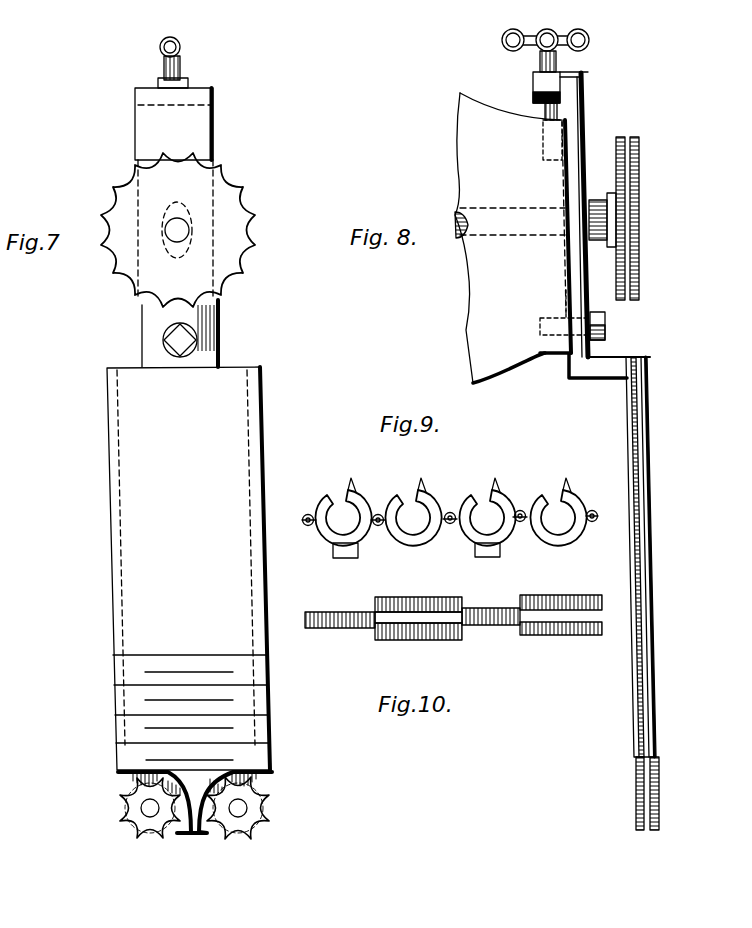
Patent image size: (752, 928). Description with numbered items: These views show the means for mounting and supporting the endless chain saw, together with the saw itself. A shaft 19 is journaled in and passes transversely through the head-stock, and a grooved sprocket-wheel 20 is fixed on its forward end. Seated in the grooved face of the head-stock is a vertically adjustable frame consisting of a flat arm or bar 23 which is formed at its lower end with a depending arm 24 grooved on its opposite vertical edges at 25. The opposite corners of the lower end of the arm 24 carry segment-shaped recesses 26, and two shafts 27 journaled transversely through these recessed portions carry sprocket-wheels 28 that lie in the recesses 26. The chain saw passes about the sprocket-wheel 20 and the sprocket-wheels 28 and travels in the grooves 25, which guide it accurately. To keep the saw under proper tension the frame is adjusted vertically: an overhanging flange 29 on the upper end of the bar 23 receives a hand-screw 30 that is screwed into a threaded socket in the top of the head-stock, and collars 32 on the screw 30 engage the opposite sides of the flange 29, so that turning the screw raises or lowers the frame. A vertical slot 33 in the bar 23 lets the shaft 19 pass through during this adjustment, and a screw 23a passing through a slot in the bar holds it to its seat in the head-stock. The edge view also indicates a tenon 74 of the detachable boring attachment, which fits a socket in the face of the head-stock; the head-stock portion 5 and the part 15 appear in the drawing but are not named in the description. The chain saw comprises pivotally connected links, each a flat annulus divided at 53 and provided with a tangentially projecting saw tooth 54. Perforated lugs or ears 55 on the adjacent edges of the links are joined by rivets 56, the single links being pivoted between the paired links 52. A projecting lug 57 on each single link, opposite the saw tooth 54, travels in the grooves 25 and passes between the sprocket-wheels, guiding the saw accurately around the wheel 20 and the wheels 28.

In FIG. 8, the plate 5 is at (510, 238).
In FIG. 8, the slot 15 is at (556, 317).
In FIG. 7, the shaft 19 is at (190, 230).
In FIG. 8, the shaft 19 is at (460, 238).
In FIG. 7, the grooved sprocket-wheel 20 is at (104, 212).
In FIG. 8, the grooved sprocket-wheel 20 is at (641, 165).
In FIG. 7, the flat arm or bar 23 is at (222, 345).
In FIG. 8, the flat arm or bar 23 is at (590, 123).
In FIG. 7, the screw 23a is at (162, 336).
In FIG. 8, the screw 23a is at (606, 327).
In FIG. 7, the depending arm 24 is at (188, 568).
In FIG. 8, the depending arm 24 is at (655, 488).
In FIG. 8, the grooves 25 is at (646, 548).
In FIG. 7, the segment-shaped recesses 26 is at (133, 777).
In FIG. 7, the shafts 27 is at (150, 808).
In FIG. 7, the sprocket-wheels 28 is at (166, 842).
In FIG. 8, the sprocket-wheels 28 is at (636, 795).
In FIG. 8, the overhanging flange 29 is at (533, 88).
In FIG. 7, the hand-screw 30 is at (183, 47).
In FIG. 8, the hand-screw 30 is at (589, 36).
In FIG. 8, the collars 32 is at (566, 73).
In FIG. 7, the slot 33 is at (176, 216).
In FIG. 9, the links 52 is at (413, 548).
In FIG. 10, the links 52 is at (438, 641).
In FIG. 9, the division 53 is at (338, 500).
In FIG. 10, the division 53 is at (490, 626).
In FIG. 9, the cutter or saw tooth 54 is at (420, 492).
In FIG. 10, the cutter or saw tooth 54 is at (340, 630).
In FIG. 9, the perforated lugs or ears 55 is at (306, 528).
In FIG. 9, the rivets 56 is at (520, 508).
In FIG. 9, the projecting lug 57 is at (346, 560).
In FIG. 8, the tenons 74 is at (540, 327).